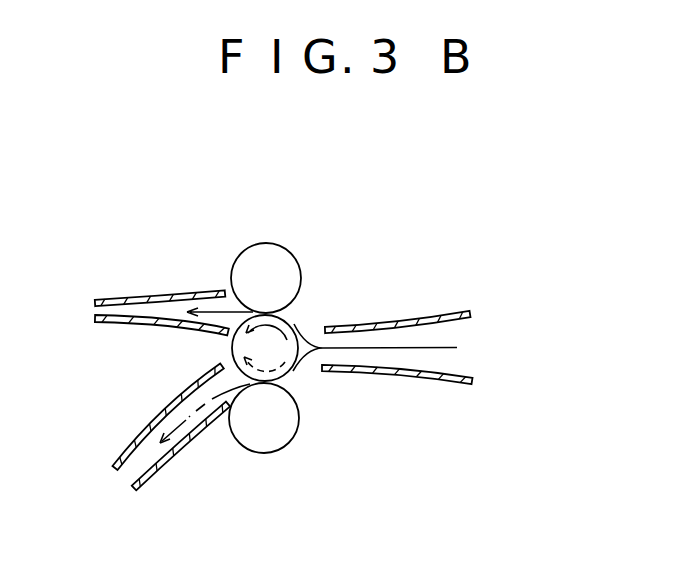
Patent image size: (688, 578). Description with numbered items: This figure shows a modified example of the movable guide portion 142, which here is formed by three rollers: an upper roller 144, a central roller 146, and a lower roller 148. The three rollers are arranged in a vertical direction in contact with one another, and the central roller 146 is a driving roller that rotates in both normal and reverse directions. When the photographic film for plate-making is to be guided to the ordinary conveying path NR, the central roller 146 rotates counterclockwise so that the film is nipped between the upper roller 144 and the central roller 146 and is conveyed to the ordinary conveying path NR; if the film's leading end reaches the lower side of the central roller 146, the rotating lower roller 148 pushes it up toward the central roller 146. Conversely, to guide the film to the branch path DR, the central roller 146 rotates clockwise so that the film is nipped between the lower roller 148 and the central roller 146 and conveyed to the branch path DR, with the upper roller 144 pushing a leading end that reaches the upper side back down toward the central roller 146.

The movable guide portion 142 is at (382, 223).
The upper roller 144 is at (292, 253).
The central roller 146 is at (290, 318).
The lower roller 148 is at (299, 412).
The ordinary conveying path NR is at (171, 300).
The branch path DR is at (155, 470).